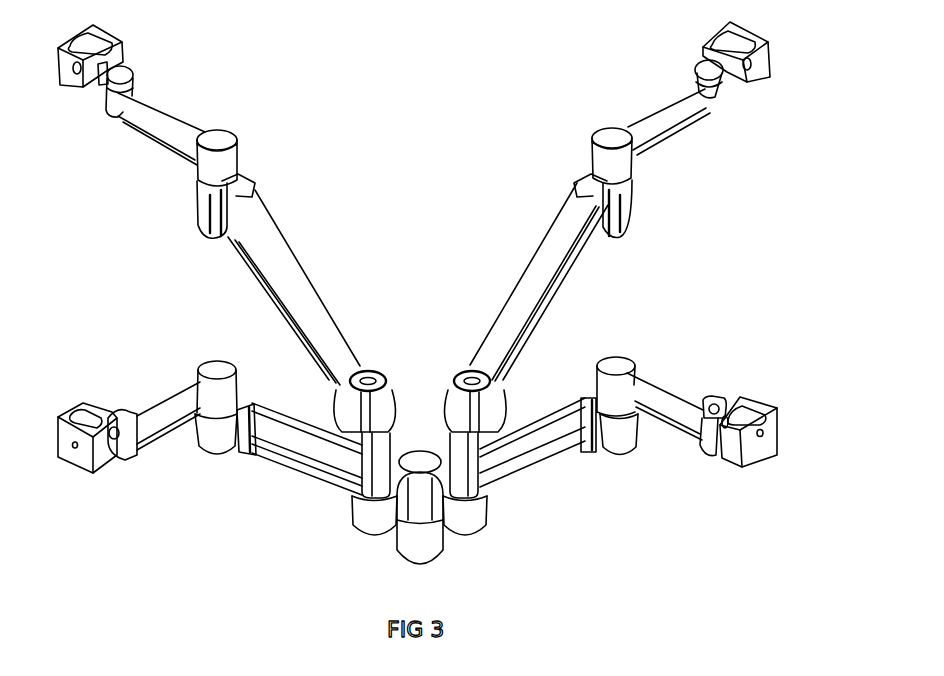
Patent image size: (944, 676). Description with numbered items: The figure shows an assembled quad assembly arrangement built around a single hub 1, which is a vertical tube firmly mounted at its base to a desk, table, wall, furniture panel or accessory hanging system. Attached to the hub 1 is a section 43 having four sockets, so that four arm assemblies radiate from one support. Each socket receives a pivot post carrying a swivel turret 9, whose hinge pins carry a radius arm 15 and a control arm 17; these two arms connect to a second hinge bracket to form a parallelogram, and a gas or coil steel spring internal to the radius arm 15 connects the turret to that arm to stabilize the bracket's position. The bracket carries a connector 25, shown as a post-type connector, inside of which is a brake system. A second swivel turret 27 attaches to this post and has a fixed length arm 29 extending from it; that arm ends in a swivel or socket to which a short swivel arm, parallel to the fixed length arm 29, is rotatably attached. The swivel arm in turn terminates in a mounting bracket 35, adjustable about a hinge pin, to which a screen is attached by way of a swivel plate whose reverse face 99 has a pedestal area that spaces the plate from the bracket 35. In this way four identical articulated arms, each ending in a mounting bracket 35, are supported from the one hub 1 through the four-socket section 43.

The hub 1 is at (417, 543).
The section having four sockets 43 is at (473, 520).
The swivel turret 9 is at (465, 370).
The reverse face 99 is at (362, 366).
The radius arm 15 is at (540, 278).
The control arm 17 is at (574, 271).
The swivel turret 27 is at (613, 361).
The connector 25 is at (620, 440).
The fixed length arm 29 is at (647, 392).
The mounting bracket 35 is at (760, 448).